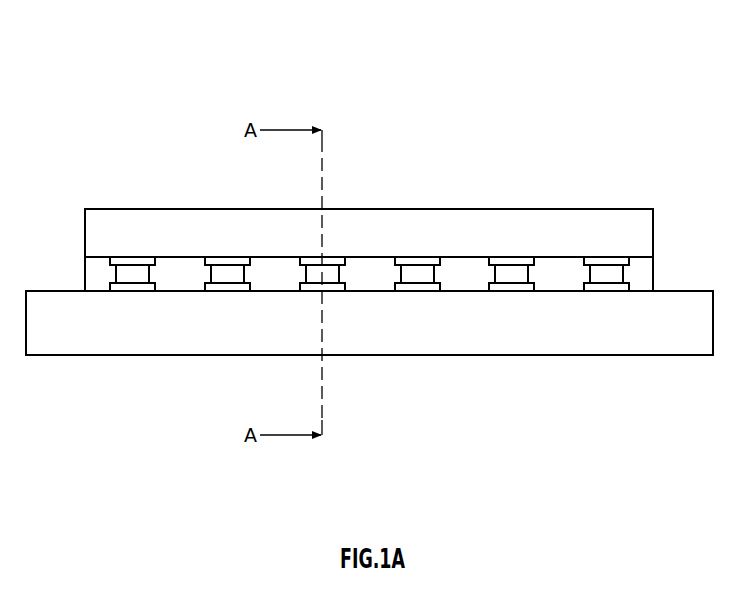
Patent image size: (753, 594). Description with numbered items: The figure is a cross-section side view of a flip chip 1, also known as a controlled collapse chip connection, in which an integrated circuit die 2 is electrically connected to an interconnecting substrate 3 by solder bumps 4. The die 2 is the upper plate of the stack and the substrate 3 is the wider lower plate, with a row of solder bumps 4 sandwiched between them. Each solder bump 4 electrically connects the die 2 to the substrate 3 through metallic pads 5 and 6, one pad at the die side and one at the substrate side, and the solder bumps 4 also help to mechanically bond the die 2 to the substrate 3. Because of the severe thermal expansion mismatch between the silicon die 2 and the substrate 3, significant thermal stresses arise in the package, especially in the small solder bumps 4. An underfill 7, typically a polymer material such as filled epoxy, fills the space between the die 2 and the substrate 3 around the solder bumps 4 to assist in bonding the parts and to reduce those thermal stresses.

The flip chip 1 is at (572, 158).
The integrated circuit die 2 is at (618, 218).
The interconnecting substrate 3 is at (662, 343).
The solder bumps 4 is at (131, 274).
The metallic pad 5 is at (510, 258).
The metallic pad 6 is at (510, 292).
The underfill 7 is at (646, 275).